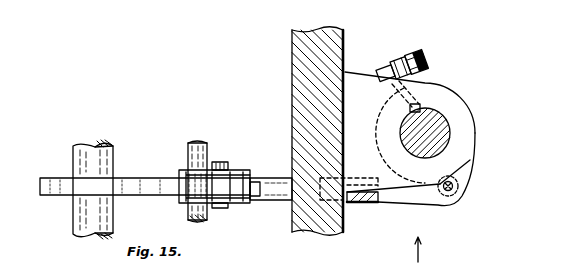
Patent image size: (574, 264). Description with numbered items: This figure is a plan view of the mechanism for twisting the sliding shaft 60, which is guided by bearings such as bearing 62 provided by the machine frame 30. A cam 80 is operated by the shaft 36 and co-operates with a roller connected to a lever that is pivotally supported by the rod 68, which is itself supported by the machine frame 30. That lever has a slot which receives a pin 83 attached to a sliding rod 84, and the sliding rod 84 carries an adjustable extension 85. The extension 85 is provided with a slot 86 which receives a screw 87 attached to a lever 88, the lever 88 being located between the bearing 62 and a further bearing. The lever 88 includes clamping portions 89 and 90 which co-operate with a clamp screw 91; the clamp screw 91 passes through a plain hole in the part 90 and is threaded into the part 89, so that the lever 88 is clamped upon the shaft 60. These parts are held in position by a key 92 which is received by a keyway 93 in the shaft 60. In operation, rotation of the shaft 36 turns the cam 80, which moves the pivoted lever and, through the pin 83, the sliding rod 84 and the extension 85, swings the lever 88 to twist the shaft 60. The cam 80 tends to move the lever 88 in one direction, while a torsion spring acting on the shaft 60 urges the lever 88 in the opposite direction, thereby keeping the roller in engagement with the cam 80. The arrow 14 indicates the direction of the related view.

The direction arrow 14 is at (408, 250).
The machine frame 30 is at (292, 78).
The shaft 36 is at (73, 168).
The sliding shaft 60 is at (440, 128).
The bearing 62 is at (468, 133).
The rod 68 is at (195, 143).
The cam 80 is at (134, 180).
The pin 83 is at (220, 162).
The sliding rod 84 is at (266, 178).
The adjustable extension 85 is at (409, 196).
The slot 86 is at (452, 196).
The screw 87 is at (458, 186).
The lever 88 is at (463, 176).
The clamping portion 89 is at (383, 70).
The clamping portion 90 is at (398, 62).
The clamp screw 91 is at (421, 58).
The key 92 is at (419, 106).
The keyway 93 is at (448, 122).